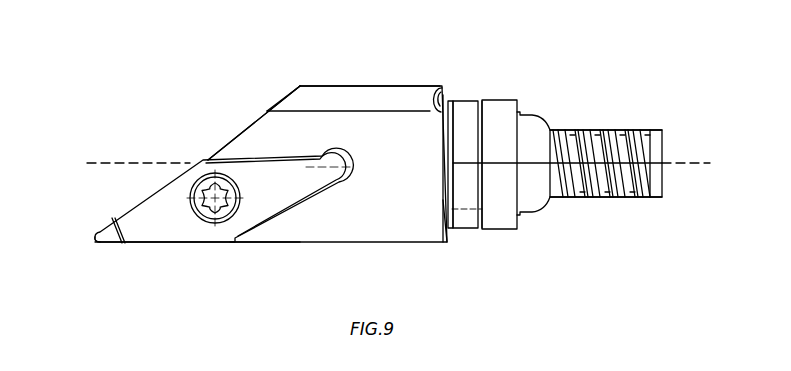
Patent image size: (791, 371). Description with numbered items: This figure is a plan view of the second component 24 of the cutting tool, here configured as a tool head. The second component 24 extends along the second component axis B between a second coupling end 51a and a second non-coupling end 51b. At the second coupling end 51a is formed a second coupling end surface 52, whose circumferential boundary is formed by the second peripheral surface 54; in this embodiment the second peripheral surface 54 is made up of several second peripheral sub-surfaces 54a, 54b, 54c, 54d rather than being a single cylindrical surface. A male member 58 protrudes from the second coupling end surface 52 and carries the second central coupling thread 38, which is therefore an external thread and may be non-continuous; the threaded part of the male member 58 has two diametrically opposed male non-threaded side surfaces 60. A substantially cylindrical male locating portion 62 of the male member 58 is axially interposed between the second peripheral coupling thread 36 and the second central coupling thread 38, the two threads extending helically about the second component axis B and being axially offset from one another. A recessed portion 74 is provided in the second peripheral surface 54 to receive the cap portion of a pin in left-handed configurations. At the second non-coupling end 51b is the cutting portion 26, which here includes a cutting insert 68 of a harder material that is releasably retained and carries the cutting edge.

The second component 24 is at (644, 26).
The cutting portion 26 is at (122, 261).
The second peripheral coupling thread 36 is at (452, 115).
The second central coupling thread 38 is at (633, 156).
The second coupling end 51a is at (464, 247).
The second non-coupling end 51b is at (120, 118).
The second coupling end surface 52 is at (482, 210).
The second peripheral surface 54 is at (413, 233).
The second peripheral sub-surface 54a is at (273, 244).
The second peripheral sub-surface 54b is at (330, 228).
The second peripheral sub-surface 54c is at (315, 97).
The second peripheral sub-surface 54d is at (338, 86).
The male member 58 is at (606, 99).
The male non-threaded side surface 60 is at (588, 130).
The male locating portion 62 is at (493, 108).
The cutting insert 68 is at (162, 208).
The recessed portion 74 is at (445, 105).
The second component axis B is at (406, 166).